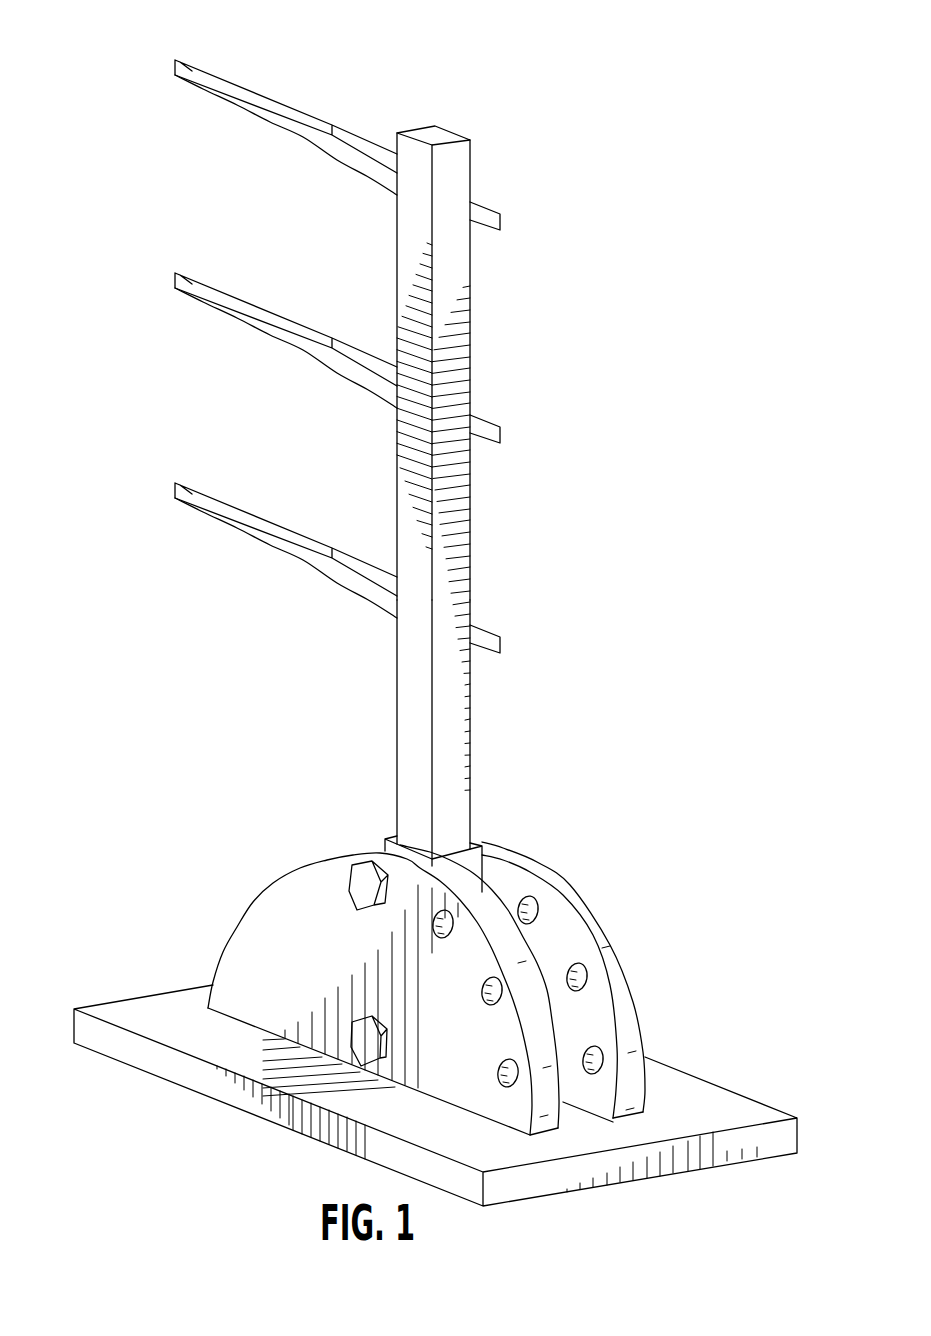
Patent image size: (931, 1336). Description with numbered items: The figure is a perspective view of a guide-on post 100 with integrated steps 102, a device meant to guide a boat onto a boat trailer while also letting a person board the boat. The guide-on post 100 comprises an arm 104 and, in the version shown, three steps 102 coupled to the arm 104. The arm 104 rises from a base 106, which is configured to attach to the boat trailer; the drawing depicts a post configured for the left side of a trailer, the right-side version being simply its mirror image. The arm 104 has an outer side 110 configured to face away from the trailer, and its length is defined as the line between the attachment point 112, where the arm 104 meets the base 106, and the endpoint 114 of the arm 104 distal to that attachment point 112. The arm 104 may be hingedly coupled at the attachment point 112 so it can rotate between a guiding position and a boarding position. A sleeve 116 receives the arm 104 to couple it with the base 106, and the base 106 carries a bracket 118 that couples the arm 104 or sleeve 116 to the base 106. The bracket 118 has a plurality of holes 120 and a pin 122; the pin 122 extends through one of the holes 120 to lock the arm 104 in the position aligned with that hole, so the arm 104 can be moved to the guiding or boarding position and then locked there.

The guide-on post 100 is at (556, 109).
The step 102 is at (175, 63).
The arm 104 is at (457, 315).
The base 106 is at (222, 1050).
The outer side 110 is at (422, 733).
The attachment point 112 is at (350, 1047).
The endpoint 114 is at (440, 134).
The sleeve 116 is at (486, 882).
The bracket 118 is at (255, 954).
The holes 120 is at (518, 1072).
The pin 122 is at (360, 879).